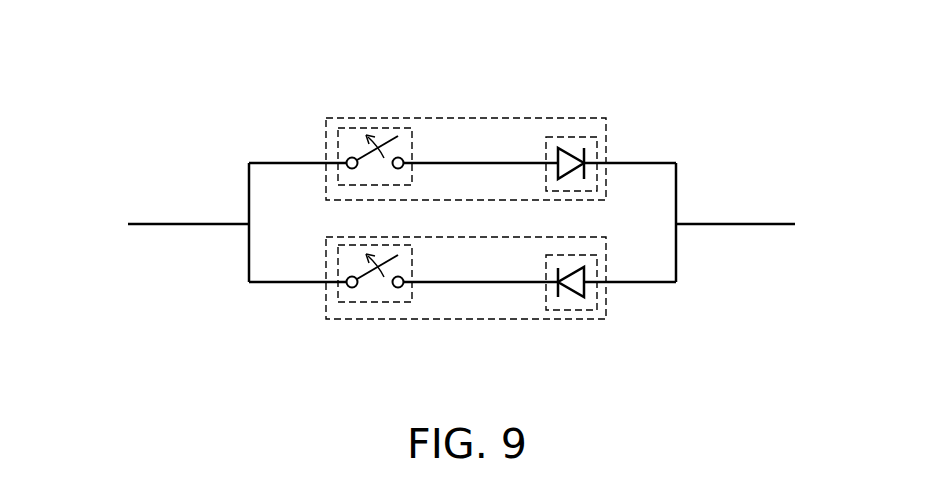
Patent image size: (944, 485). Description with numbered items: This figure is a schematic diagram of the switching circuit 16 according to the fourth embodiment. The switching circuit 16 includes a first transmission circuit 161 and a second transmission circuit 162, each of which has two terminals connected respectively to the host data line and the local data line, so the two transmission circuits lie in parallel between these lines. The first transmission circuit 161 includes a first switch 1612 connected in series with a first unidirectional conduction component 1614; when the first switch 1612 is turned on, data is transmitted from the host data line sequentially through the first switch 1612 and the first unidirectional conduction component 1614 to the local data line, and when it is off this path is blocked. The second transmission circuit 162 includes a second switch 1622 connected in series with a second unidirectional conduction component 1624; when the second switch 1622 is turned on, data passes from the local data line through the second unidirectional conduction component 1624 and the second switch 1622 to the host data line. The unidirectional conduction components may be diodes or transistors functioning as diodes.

The switching circuit 16 is at (668, 84).
The first transmission circuit 161 is at (473, 118).
The second transmission circuit 162 is at (472, 319).
The first switch 1612 is at (370, 128).
The first unidirectional conduction component 1614 is at (566, 137).
The second switch 1622 is at (369, 302).
The second unidirectional conduction component 1624 is at (564, 310).